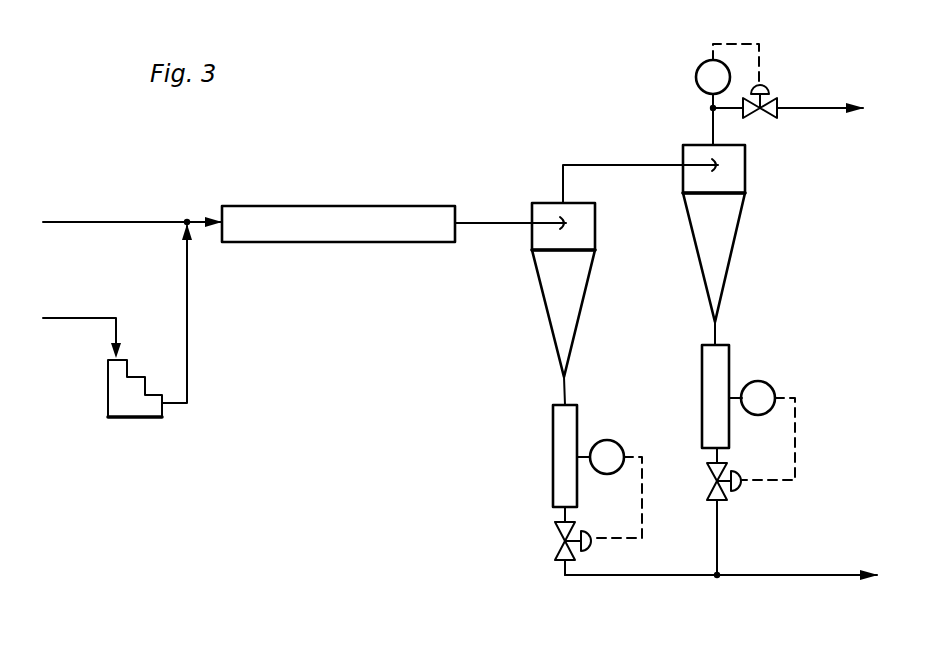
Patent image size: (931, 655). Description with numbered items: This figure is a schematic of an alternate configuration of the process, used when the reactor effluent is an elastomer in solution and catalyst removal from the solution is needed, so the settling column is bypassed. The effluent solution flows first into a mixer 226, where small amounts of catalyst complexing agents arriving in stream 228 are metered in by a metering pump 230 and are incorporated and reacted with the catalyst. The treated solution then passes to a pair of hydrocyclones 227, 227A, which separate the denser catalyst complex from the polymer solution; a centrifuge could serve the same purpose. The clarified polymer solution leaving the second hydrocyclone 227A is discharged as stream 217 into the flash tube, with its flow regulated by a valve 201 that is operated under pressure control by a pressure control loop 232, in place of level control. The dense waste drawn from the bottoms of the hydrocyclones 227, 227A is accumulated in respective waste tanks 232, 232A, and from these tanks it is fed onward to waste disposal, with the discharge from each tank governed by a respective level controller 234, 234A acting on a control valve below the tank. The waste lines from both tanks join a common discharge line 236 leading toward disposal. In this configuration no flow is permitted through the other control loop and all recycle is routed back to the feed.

The valve 201 is at (760, 120).
The stream 217 is at (818, 108).
The mixer 226 is at (332, 206).
The hydrocyclone 227 is at (540, 282).
The hydrocyclone 227A is at (742, 225).
The stream 228 is at (93, 318).
The metering pump 230 is at (130, 418).
The pressure control loop 232 is at (713, 55).
The waste tank 232A is at (730, 355).
The level controller 234 is at (642, 457).
The level controller 234A is at (795, 398).
The solids discharge line 236 is at (643, 577).